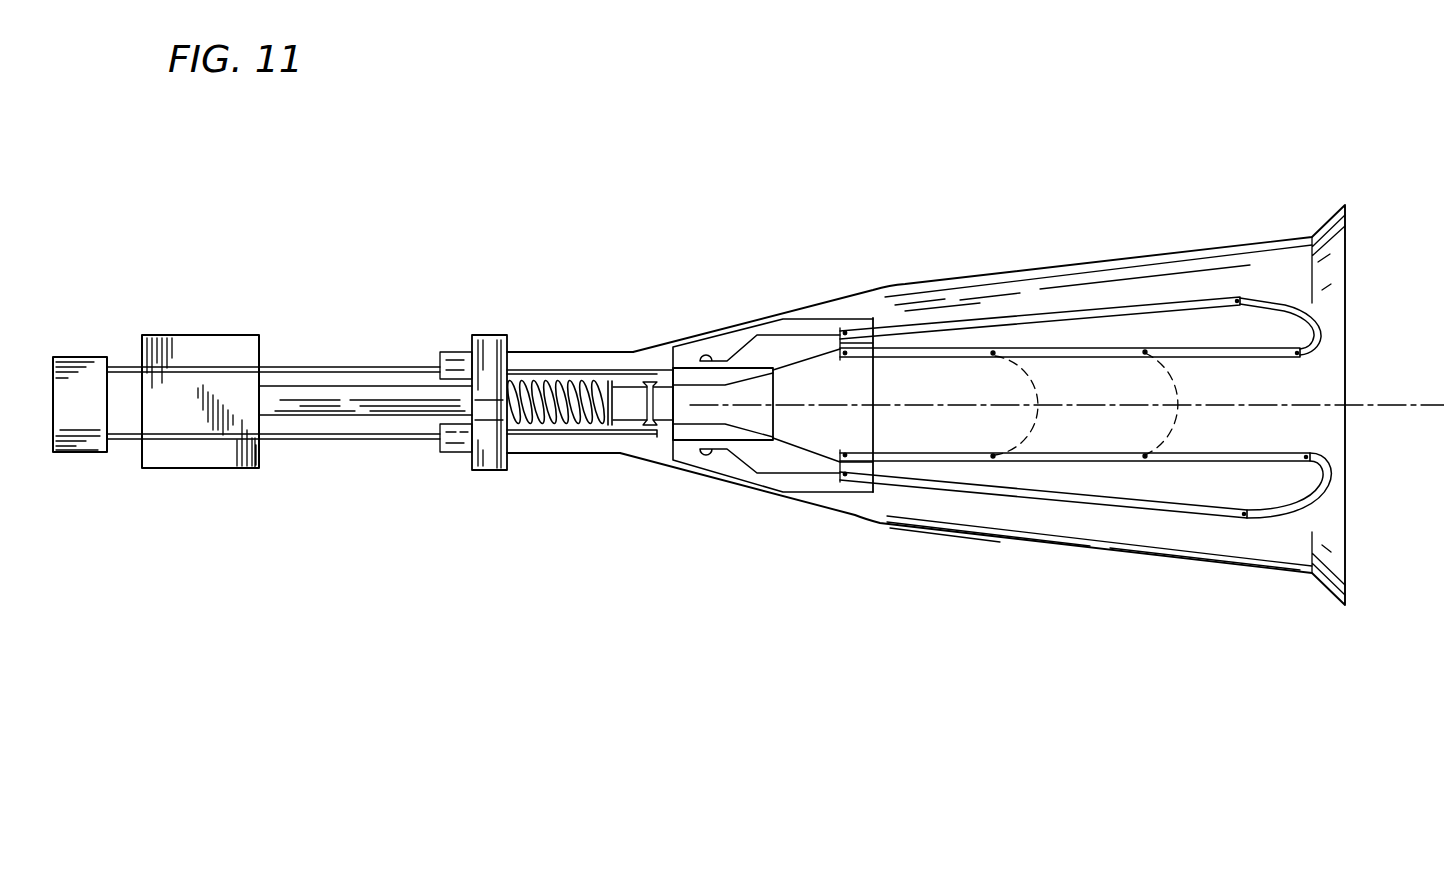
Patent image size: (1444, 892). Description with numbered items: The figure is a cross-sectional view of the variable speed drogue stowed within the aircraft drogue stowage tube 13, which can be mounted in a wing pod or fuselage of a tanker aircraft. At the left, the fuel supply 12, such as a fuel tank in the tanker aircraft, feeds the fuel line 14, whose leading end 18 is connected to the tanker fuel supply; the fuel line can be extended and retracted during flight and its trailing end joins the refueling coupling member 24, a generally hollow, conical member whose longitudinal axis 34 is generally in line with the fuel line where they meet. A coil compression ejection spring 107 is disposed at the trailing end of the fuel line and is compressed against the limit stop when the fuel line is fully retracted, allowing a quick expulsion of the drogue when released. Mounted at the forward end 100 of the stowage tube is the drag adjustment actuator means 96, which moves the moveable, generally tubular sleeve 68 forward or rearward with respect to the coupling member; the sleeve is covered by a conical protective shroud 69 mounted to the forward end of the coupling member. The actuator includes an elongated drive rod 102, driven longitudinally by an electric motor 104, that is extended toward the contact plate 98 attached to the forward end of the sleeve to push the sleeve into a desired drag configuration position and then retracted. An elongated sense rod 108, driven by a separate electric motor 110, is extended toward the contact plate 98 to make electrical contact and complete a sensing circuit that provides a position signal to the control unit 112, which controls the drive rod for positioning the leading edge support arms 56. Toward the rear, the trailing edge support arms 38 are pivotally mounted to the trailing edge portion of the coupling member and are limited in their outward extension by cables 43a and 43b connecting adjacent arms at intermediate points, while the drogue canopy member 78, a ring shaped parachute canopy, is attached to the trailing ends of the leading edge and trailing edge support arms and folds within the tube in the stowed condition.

The control unit 112 is at (68, 357).
The fuel supply 12 is at (224, 345).
The fuel line 14 is at (383, 386).
The leading end 18 is at (300, 386).
The electric motor 104 is at (457, 454).
The electric motor 110 is at (457, 350).
The coil compression ejection spring 107 is at (553, 382).
The sense rod 108 is at (600, 370).
The drive rod 102 is at (600, 432).
The contact plate 98 is at (655, 437).
The sleeve 68 is at (680, 440).
The forward end of stowage tube 100 is at (693, 345).
The protective shroud 69 is at (745, 338).
The refueling coupling member 24 is at (805, 365).
The aircraft drogue stowage tube 13 is at (930, 282).
The leading edge support arms 56 is at (1140, 303).
The drogue canopy member 78 is at (1313, 307).
The trailing edge support arms 38 is at (1230, 456).
The longitudinal axis 34 is at (1400, 403).
The cable 43b is at (1041, 390).
The cable 43a is at (1196, 389).
The drag adjustment actuator means 96 is at (417, 455).